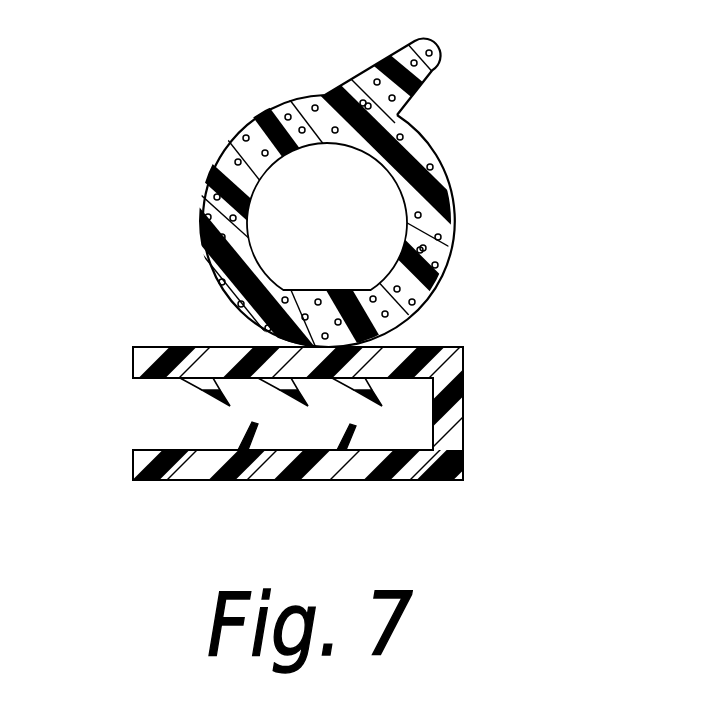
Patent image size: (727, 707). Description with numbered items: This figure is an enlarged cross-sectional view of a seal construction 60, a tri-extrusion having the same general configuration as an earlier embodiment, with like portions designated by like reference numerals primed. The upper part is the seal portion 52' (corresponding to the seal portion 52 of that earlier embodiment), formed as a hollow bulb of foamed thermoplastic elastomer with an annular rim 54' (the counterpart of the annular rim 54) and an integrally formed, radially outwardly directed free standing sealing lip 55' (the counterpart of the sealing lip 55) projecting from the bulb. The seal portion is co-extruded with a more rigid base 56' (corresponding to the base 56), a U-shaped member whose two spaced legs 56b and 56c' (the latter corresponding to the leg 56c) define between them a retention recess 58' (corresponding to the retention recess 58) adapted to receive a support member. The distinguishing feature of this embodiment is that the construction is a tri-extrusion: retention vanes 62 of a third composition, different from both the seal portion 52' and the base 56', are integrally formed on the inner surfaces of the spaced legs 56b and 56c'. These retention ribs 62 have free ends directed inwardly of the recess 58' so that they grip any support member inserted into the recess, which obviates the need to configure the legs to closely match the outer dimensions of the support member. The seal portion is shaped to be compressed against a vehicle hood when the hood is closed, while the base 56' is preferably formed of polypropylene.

The seal portion 52' is at (373, 201).
The annular rim 54' is at (254, 221).
The sealing lip 55' is at (448, 77).
The seal construction 60 is at (332, 201).
The base 56' is at (319, 416).
The leg 56b is at (366, 361).
The leg 56c' is at (355, 448).
The retention recess 58' is at (265, 490).
The retention vanes 62 is at (229, 397).
The seal portion 52 is at (373, 201).
The annular rim 54 is at (254, 221).
The sealing lip 55 is at (448, 77).
The base 56 is at (319, 416).
The leg 56c is at (355, 448).
The retention recess 58 is at (265, 490).